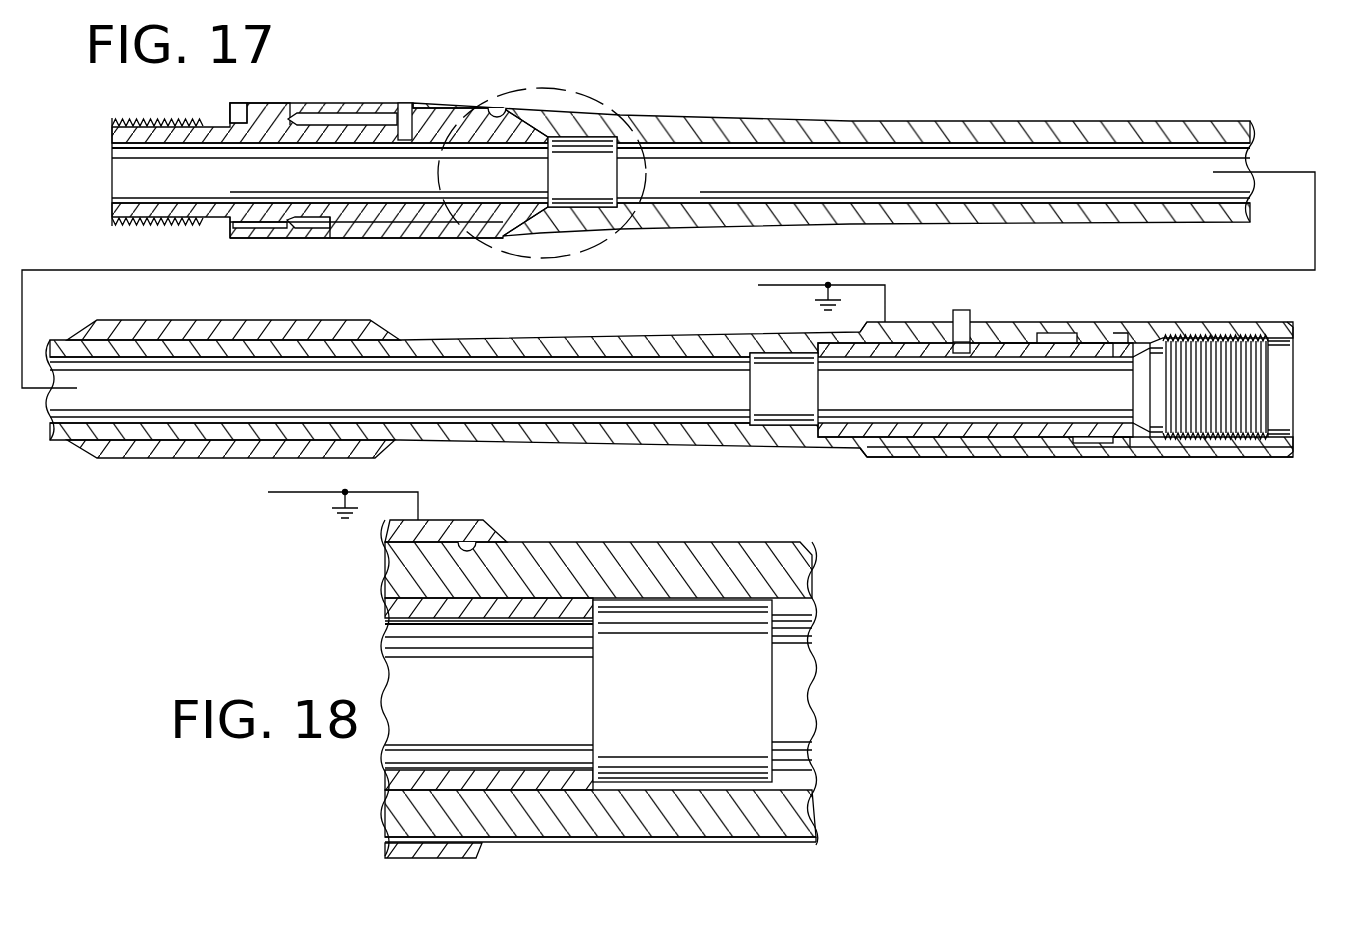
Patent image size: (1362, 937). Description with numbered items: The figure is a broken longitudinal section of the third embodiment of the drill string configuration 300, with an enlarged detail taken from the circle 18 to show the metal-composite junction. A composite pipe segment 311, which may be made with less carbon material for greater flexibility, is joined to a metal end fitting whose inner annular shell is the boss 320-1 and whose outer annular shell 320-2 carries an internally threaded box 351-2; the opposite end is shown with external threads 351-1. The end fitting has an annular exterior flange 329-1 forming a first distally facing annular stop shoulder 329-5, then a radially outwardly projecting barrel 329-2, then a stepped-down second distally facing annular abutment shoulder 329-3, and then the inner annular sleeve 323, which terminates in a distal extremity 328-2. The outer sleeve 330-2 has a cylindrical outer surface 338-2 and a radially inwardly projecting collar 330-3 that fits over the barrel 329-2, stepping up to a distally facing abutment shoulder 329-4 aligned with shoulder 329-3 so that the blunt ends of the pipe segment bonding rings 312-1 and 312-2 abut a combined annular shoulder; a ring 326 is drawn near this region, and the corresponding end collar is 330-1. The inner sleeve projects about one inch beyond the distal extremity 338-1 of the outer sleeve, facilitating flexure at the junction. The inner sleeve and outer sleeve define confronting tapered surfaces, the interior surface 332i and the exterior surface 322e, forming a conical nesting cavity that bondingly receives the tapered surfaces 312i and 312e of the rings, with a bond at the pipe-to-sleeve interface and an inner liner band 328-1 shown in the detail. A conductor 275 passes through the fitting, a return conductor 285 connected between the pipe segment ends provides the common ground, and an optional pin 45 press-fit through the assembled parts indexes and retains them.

In FIG. 17, the drill string configuration 300 is at (845, 58).
In FIG. 17, the composite pipe segment 311 is at (958, 124).
In FIG. 18, the composite pipe segment 311 is at (775, 541).
In FIG. 17, the circle 18 is at (510, 84).
In FIG. 17, the first distally facing annular stop shoulder 329-5 is at (250, 105).
In FIG. 17, the barrel 329-2 is at (258, 108).
In FIG. 17, the annular exterior flange 329-1 is at (302, 114).
In FIG. 17, the interior tapered sleeve surface 332i is at (500, 115).
In FIG. 18, the interior tapered sleeve surface 332i is at (485, 545).
In FIG. 17, the conductor 275 is at (285, 226).
In FIG. 18, the conductor 275 is at (800, 838).
In FIG. 17, the external threads 351-1 is at (118, 221).
In FIG. 17, the boss with threaded nipple 320-1 is at (213, 229).
In FIG. 17, the exterior tapered surface 312e is at (297, 235).
In FIG. 18, the exterior tapered surface 312e is at (450, 840).
In FIG. 17, the interior tapered surface 312i is at (329, 218).
In FIG. 18, the interior tapered surface 312i is at (402, 780).
In FIG. 17, the end collar 330-1 is at (391, 242).
In FIG. 18, the end collar 330-1 is at (383, 848).
In FIG. 17, the insert end 322e is at (547, 212).
In FIG. 18, the insert end 322e is at (560, 780).
In FIG. 17, the return conductor 285 is at (757, 283).
In FIG. 18, the return conductor 285 is at (268, 492).
In FIG. 17, the pin 45 is at (962, 310).
In FIG. 17, the inner annular sleeve 323 is at (1000, 350).
In FIG. 17, the distally facing abutment shoulder 329-4 is at (1068, 333).
In FIG. 17, the outer annular shell 320-2 is at (1224, 314).
In FIG. 17, the collar 330-3 is at (1113, 330).
In FIG. 17, the internally threaded box 351-2 is at (1260, 336).
In FIG. 17, the distal extremity 328-2 is at (838, 428).
In FIG. 17, the cylindrical outer surface 338-2 is at (892, 453).
In FIG. 17, the pipe segment bonding ring 312-2 is at (963, 434).
In FIG. 17, the outer sleeve 330-2 is at (1050, 460).
In FIG. 17, the second distally facing annular abutment shoulder 329-3 is at (1070, 443).
In FIG. 17, the ring 326 is at (1110, 452).
In FIG. 17, the pipe segment bonding ring 312-1 is at (330, 170).
In FIG. 18, the pipe segment bonding ring 312-1 is at (398, 564).
In FIG. 18, the inner sleeve 328-1 is at (585, 604).
In FIG. 18, the distal extremity of outer sleeve 338-1 is at (440, 858).